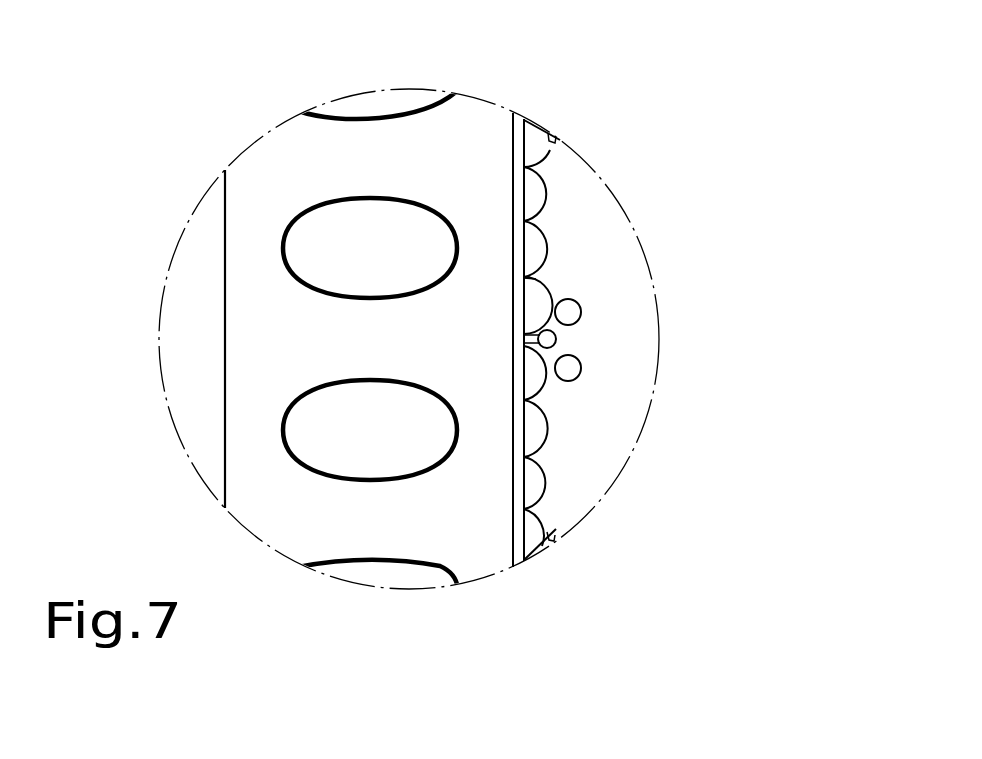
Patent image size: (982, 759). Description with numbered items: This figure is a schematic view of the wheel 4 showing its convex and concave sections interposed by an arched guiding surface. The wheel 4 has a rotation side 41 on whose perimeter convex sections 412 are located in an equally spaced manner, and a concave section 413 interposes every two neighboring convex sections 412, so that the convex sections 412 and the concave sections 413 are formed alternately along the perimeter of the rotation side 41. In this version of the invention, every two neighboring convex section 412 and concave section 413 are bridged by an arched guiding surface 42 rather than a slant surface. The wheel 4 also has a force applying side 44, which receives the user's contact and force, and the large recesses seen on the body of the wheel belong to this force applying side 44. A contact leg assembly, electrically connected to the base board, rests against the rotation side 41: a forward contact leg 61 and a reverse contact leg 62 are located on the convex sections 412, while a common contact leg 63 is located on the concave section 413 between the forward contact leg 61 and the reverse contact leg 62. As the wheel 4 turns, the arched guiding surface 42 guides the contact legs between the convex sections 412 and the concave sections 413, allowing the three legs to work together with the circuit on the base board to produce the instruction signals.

The wheel 4 is at (210, 268).
The rotation side 41 is at (518, 121).
The convex section 412 is at (553, 250).
The concave section 413 is at (536, 279).
The arched guiding surface 42 is at (528, 458).
The force applying side 44 is at (315, 255).
The forward contact leg 61 is at (568, 368).
The reverse contact leg 62 is at (568, 312).
The common contact leg 63 is at (547, 339).